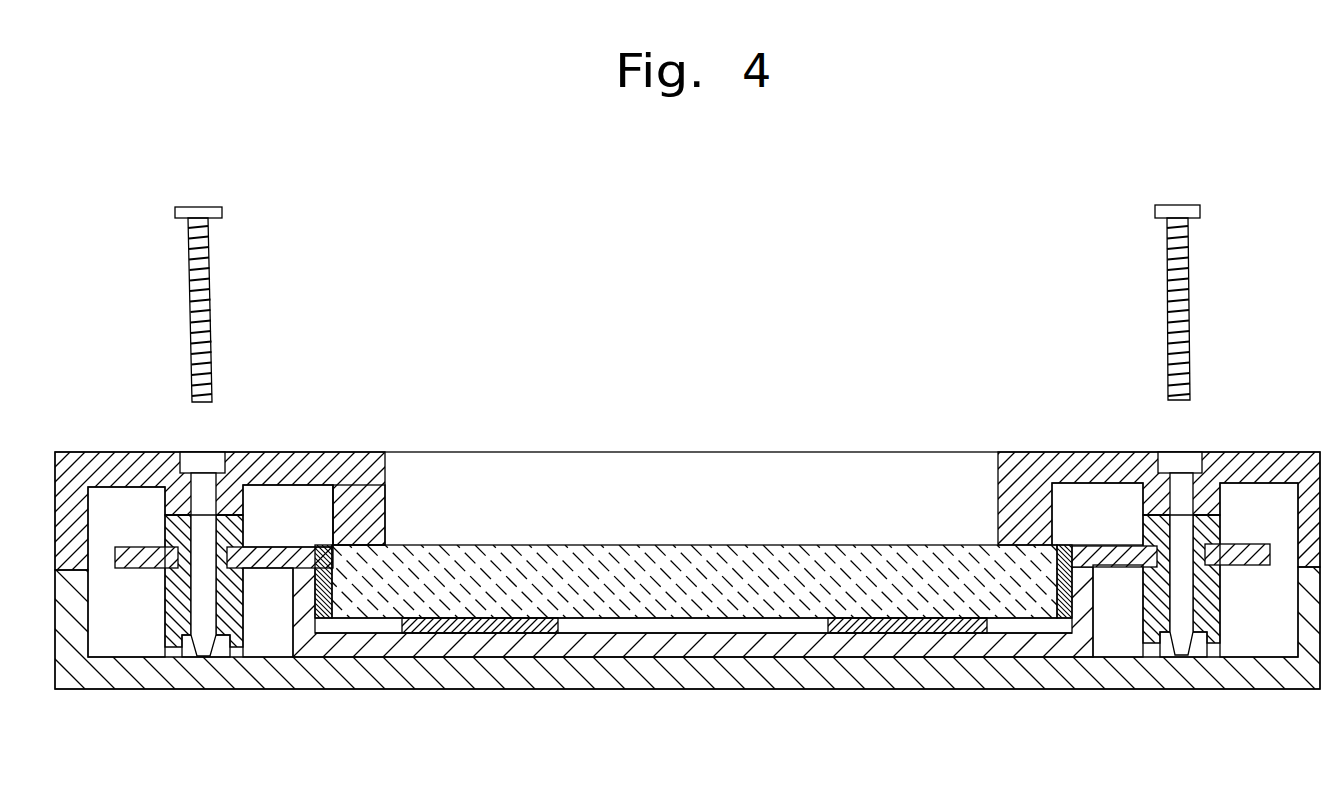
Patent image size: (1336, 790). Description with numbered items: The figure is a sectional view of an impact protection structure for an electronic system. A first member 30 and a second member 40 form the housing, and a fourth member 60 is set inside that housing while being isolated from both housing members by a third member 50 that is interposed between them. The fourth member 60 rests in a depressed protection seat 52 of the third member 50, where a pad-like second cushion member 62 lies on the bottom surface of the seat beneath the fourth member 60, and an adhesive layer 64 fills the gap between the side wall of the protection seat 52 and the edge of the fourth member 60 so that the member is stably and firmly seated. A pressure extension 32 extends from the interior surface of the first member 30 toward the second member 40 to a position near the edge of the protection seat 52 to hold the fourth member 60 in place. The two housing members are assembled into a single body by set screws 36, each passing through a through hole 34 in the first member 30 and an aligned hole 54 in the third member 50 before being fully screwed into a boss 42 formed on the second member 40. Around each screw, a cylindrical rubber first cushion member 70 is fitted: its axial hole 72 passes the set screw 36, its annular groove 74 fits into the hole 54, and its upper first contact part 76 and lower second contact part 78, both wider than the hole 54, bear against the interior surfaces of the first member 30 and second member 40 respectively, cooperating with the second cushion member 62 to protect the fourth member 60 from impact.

The first member 30 is at (328, 462).
The pressure extension 32 is at (380, 490).
The through hole 34 is at (204, 497).
The set screw 36 is at (214, 301).
The second member 40 is at (370, 673).
The boss 42 is at (188, 656).
The third member 50 is at (293, 548).
The protection seat 52 is at (433, 647).
The through hole 54 is at (177, 557).
The fourth member 60 is at (538, 557).
The second cushion member 62 is at (517, 623).
The adhesive layer 64 is at (320, 622).
The first cushion member 70 is at (160, 600).
The axial hole 72 is at (208, 596).
The annular groove 74 is at (222, 549).
The first contact part 76 is at (173, 530).
The second contact part 78 is at (236, 624).